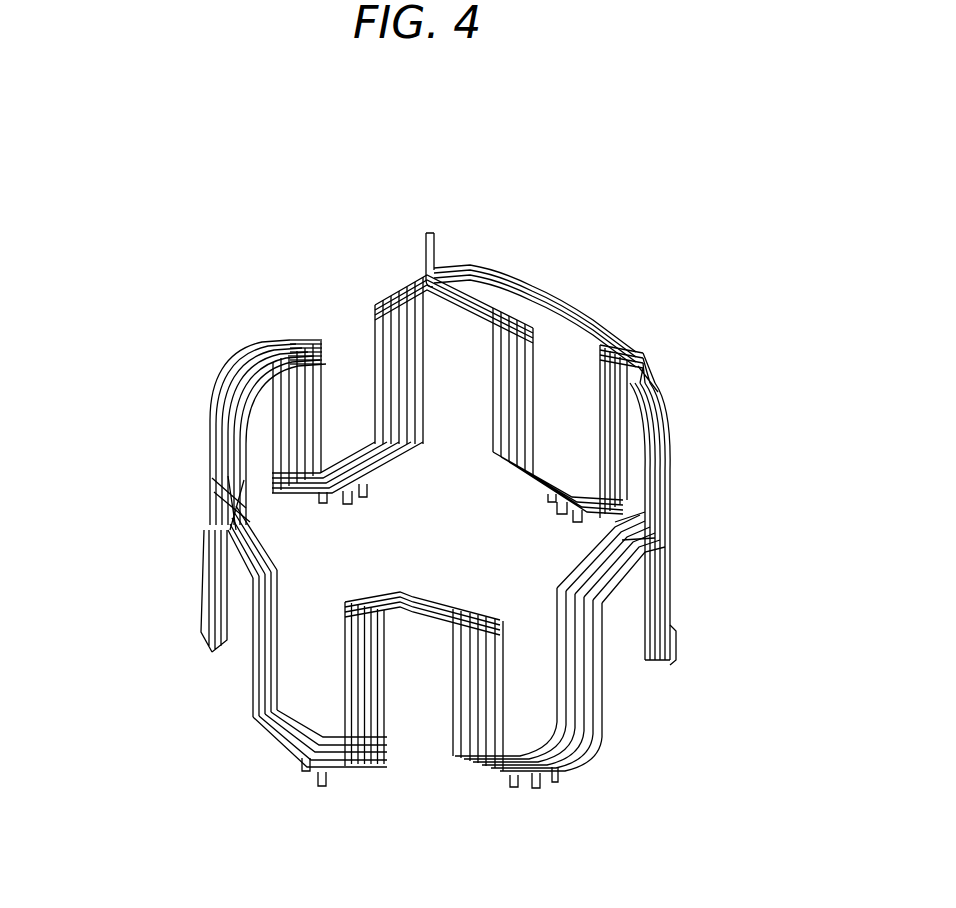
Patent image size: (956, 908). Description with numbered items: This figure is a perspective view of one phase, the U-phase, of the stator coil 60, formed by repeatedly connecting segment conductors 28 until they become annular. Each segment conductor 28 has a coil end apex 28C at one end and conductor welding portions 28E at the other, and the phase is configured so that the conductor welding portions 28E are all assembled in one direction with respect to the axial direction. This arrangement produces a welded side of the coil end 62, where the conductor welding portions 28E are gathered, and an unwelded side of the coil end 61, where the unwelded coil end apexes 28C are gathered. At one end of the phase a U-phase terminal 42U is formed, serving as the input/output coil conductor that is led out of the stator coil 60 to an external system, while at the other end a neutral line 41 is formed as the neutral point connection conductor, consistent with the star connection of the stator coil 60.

The stator coil 60 is at (669, 165).
The neutral line 41 is at (617, 335).
The U-phase terminal 42U is at (424, 241).
The segment conductor 28 is at (503, 623).
The coil end apex 28C is at (436, 611).
The conductor welding portion 28E is at (558, 779).
The unwelded side of the coil end 61 is at (350, 603).
The welded side of the coil end 62 is at (303, 772).